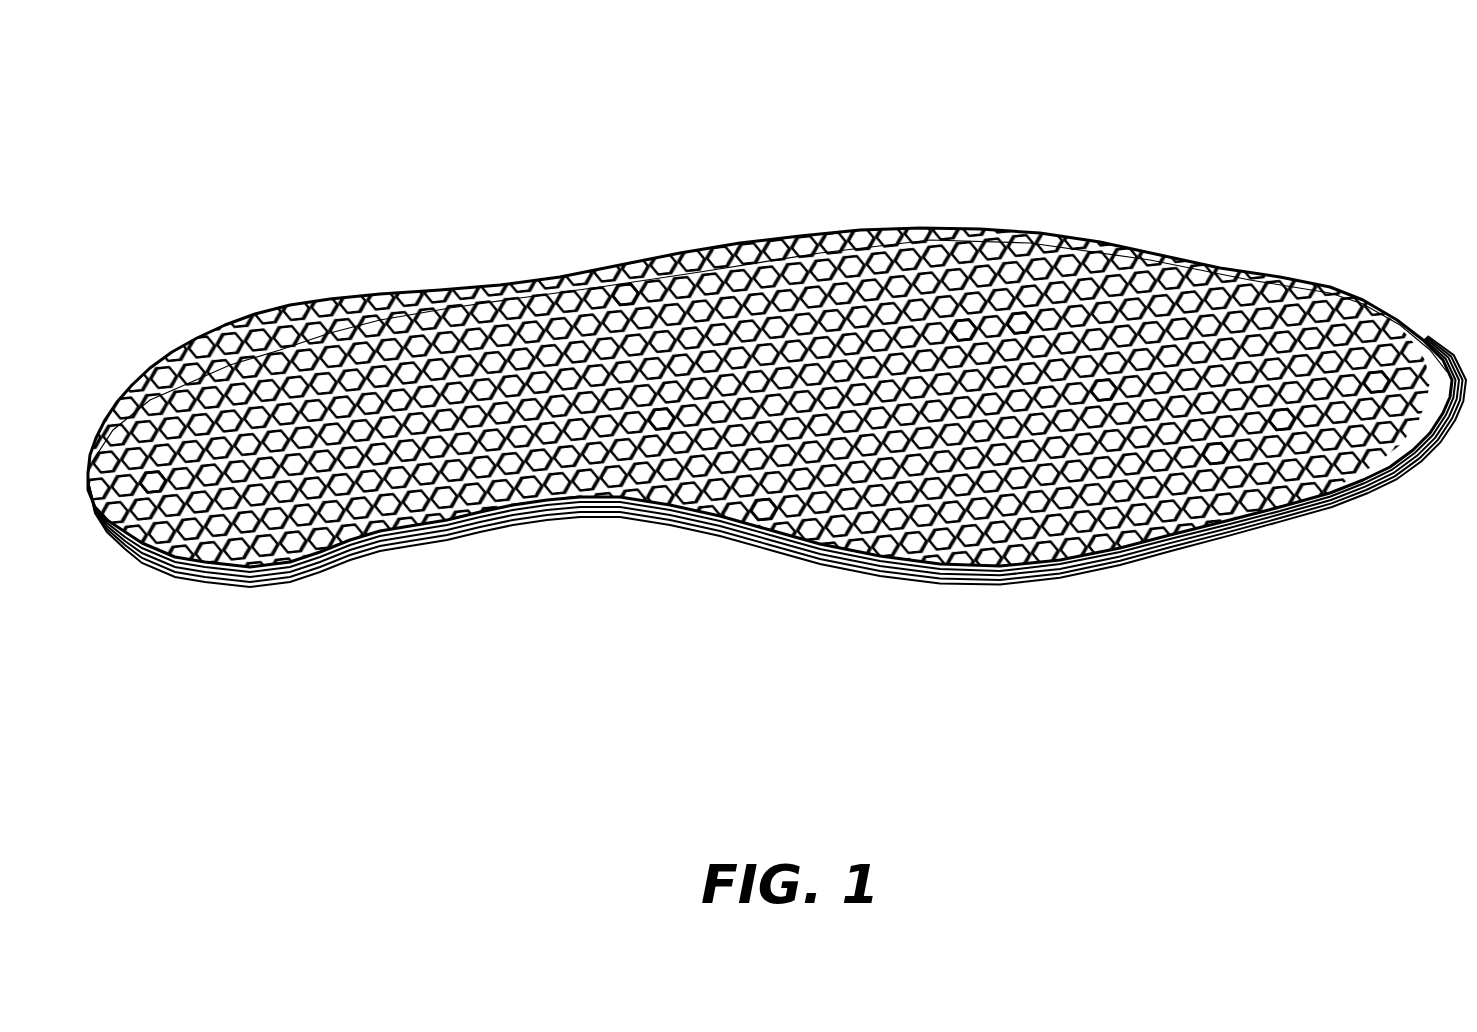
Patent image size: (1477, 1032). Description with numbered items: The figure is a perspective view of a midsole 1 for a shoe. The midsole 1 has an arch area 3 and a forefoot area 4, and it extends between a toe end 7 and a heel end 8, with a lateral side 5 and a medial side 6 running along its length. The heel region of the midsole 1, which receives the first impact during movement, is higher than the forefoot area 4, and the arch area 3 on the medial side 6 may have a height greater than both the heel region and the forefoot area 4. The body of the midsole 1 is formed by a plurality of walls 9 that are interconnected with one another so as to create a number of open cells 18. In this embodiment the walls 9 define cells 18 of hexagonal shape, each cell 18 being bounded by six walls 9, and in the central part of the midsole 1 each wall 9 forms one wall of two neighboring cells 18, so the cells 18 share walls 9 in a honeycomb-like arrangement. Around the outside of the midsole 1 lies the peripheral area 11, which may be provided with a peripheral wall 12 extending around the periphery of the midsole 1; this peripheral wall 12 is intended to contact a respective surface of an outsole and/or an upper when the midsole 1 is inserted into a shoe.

The midsole 1 is at (1146, 132).
The arch area 3 is at (1116, 383).
The forefoot area 4 is at (659, 430).
The lateral side 5 is at (626, 291).
The medial side 6 is at (770, 514).
The toe end 7 is at (1378, 377).
The heel end 8 is at (153, 483).
The walls 9 is at (963, 325).
The peripheral area 11 is at (362, 322).
The peripheral wall 12 is at (528, 523).
The cells 18 is at (1217, 460).